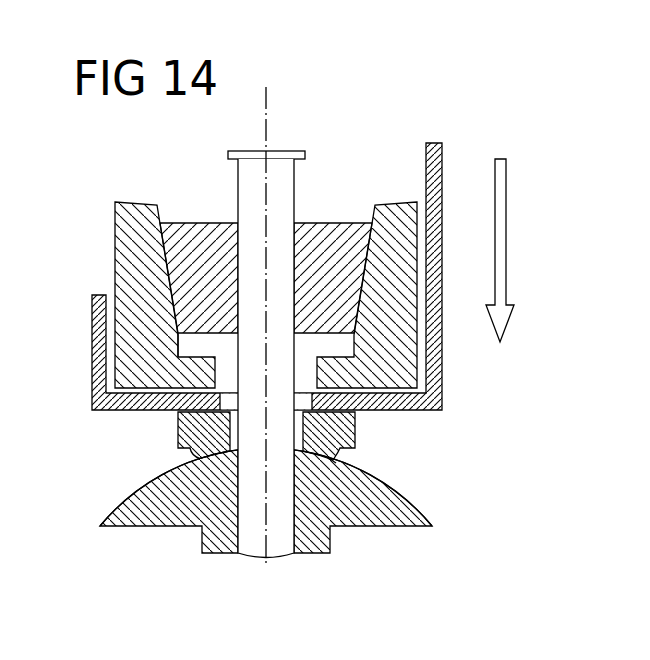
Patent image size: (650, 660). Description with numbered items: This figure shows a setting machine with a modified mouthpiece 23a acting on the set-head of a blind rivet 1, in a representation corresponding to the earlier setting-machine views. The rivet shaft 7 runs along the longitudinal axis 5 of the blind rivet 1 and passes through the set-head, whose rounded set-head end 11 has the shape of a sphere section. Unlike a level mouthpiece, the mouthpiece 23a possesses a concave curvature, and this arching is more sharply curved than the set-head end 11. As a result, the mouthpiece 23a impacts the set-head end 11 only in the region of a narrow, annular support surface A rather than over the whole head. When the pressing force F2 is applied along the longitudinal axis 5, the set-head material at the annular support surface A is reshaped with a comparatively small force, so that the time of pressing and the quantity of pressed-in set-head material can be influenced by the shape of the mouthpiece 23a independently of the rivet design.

The longitudinal axis 5 is at (267, 107).
The rivet shaft 7 is at (248, 187).
The pressing force F2 is at (503, 227).
The mouthpiece 23a is at (340, 432).
The annular support surface A is at (333, 462).
The set-head end 11 is at (178, 465).
The blind rivet 1 is at (343, 547).